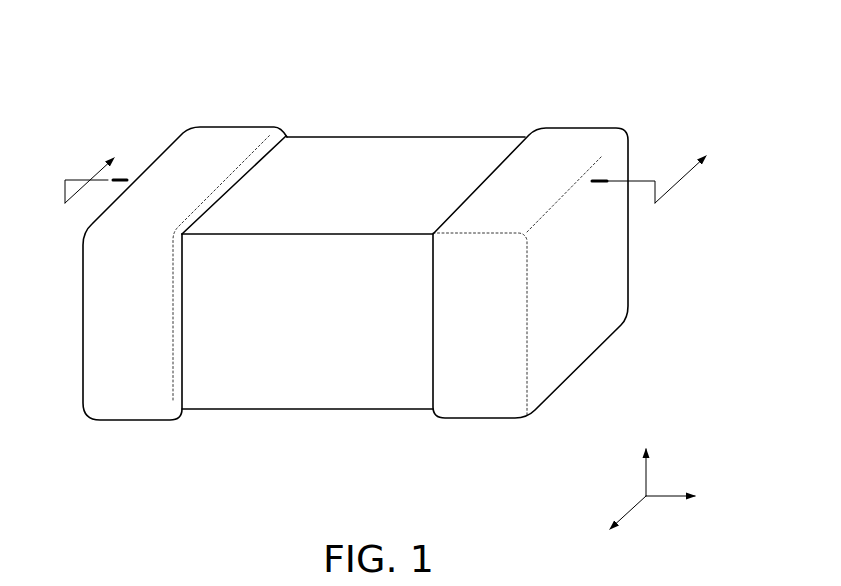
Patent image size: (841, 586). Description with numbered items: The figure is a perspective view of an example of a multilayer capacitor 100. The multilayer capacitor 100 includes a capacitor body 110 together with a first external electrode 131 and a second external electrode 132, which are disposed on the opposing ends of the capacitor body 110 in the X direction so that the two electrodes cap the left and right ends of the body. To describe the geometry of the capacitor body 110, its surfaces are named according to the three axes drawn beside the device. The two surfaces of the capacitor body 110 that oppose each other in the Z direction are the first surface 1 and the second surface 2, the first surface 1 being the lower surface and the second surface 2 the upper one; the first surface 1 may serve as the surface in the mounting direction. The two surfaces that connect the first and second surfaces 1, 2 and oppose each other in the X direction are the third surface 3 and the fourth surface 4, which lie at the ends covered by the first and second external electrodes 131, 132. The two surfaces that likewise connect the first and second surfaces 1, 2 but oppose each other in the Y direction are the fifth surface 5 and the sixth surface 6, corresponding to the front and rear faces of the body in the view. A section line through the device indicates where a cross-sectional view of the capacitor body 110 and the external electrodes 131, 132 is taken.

The multilayer capacitor 100 is at (397, 15).
The capacitor body 110 is at (397, 138).
The first external electrode 131 is at (223, 130).
The second external electrode 132 is at (578, 131).
The first surface 1 is at (403, 375).
The second surface 2 is at (346, 180).
The third surface 3 is at (117, 343).
The fourth surface 4 is at (593, 274).
The fifth surface 5 is at (347, 335).
The sixth surface 6 is at (434, 175).